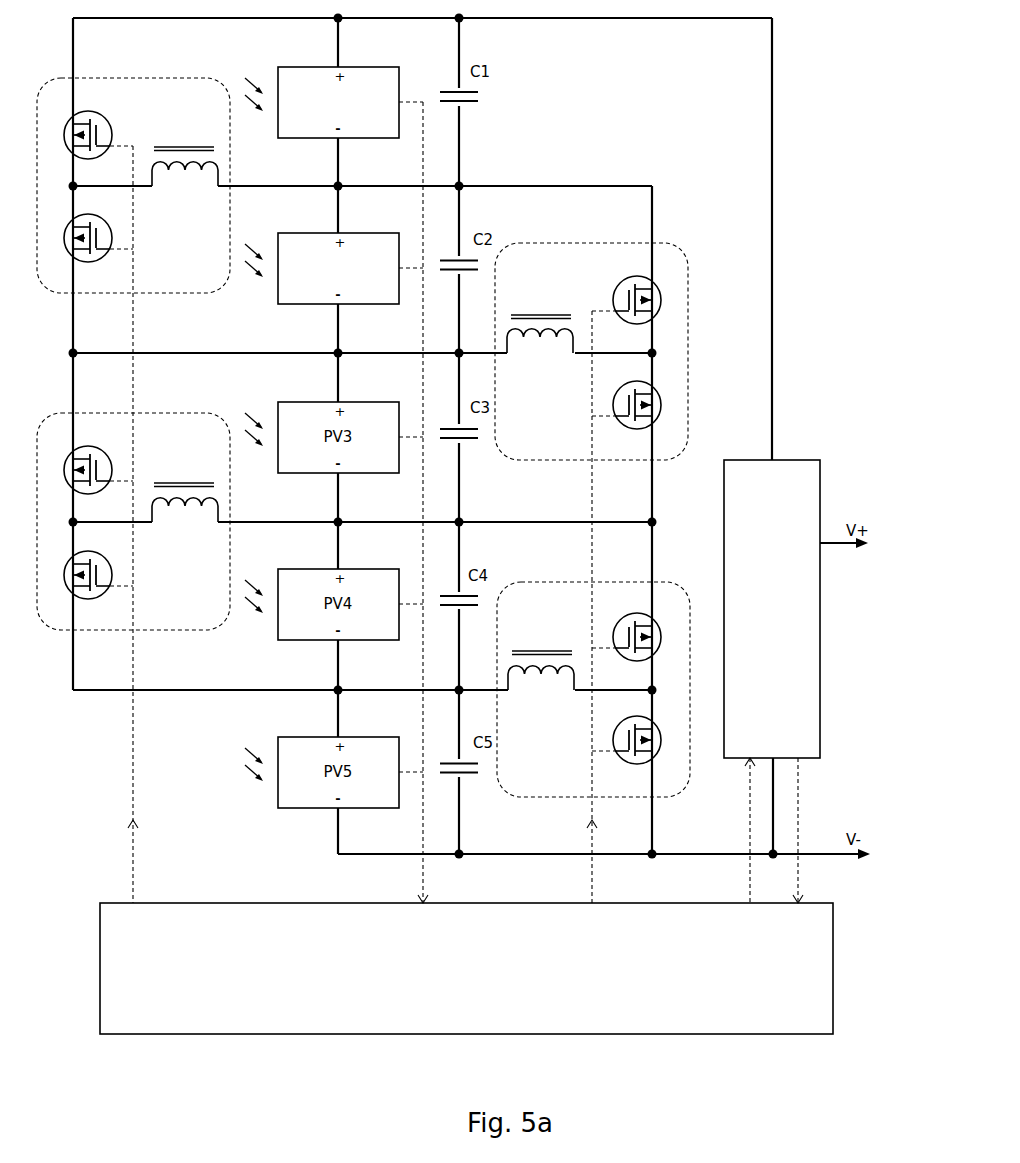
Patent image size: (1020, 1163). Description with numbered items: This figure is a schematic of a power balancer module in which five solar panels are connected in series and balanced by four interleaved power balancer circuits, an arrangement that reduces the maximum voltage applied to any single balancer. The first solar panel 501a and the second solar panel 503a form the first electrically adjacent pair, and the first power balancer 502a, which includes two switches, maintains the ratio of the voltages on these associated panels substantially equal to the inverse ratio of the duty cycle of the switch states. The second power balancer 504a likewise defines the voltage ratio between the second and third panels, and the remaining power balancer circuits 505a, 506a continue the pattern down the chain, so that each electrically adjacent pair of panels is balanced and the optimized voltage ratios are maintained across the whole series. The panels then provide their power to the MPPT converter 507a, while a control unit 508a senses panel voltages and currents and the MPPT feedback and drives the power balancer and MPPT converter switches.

The photovoltaic cell PV1 501a is at (299, 67).
The first power balancer 502a is at (134, 91).
The photovoltaic cell PV2 503a is at (300, 233).
The second power balancer 504a is at (577, 257).
The power balancer circuit 505a is at (159, 426).
The power balancer circuit 506a is at (567, 591).
The MPPT converter 507a is at (793, 460).
The control unit 508a is at (224, 911).